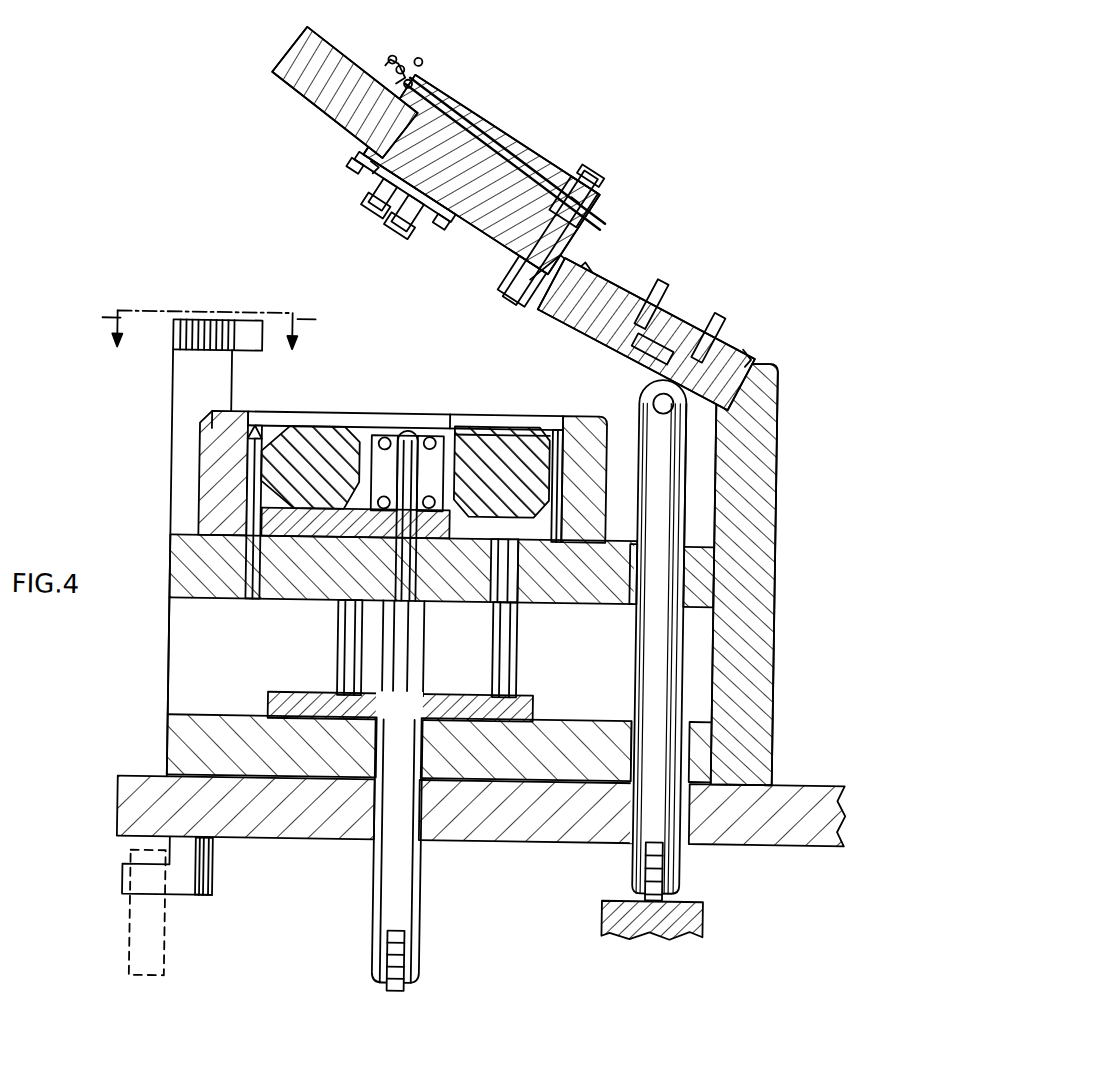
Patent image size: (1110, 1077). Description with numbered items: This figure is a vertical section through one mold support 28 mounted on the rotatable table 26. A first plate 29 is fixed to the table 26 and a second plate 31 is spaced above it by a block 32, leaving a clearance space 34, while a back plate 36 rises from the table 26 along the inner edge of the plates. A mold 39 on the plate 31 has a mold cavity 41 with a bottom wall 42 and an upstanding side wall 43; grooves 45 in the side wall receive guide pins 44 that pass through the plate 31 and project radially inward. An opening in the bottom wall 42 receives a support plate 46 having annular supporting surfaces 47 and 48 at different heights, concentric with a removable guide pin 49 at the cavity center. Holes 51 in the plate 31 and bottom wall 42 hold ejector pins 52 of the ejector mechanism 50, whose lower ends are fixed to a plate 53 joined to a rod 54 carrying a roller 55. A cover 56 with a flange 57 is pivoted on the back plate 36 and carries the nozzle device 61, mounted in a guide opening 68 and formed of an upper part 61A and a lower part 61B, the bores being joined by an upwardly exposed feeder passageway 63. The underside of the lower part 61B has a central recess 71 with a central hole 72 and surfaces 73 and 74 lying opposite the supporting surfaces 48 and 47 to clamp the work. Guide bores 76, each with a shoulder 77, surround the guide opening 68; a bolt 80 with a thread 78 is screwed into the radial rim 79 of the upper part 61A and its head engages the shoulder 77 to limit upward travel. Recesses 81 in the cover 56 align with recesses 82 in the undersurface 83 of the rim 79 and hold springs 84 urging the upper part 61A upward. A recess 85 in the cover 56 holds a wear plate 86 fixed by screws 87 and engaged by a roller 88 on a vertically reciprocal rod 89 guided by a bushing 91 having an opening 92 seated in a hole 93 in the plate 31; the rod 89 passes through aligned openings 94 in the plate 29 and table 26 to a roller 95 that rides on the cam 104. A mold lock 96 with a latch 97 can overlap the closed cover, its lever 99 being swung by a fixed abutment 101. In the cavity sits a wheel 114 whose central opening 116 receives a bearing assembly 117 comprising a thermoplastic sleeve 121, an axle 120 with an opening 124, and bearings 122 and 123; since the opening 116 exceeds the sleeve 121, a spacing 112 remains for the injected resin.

The table 26 is at (145, 772).
The mold support device 28 is at (238, 265).
The first plate 29 is at (180, 725).
The second plate 31 is at (178, 572).
The block 32 is at (176, 629).
The clearance space 34 is at (191, 664).
The back plate 36 is at (766, 647).
The mold 39 is at (484, 405).
The mold cavity 41 is at (319, 412).
The bottom wall 42 is at (302, 512).
The upstanding side wall 43 is at (256, 421).
The guide pin 44 is at (260, 460).
The groove 45 is at (253, 418).
The support plate 46 is at (483, 540).
The supporting surface 47 is at (525, 423).
The supporting surface 48 is at (434, 532).
The removable guide pin 49 is at (405, 532).
The ejector mechanism 50 is at (334, 660).
The hole 51 is at (519, 601).
The ejector pin 52 is at (516, 666).
The plate 53 is at (470, 704).
The rod 54 is at (413, 886).
The roller 55 is at (412, 990).
The cover 56 is at (661, 282).
The flange 57 is at (729, 354).
The nozzle device 61 is at (546, 150).
The upper part 61A is at (569, 194).
The lower part 61B is at (380, 171).
The feeder passageway 63 is at (505, 135).
The guide opening 68 is at (367, 152).
The central recess 71 is at (427, 226).
The central hole 72 is at (455, 222).
The surface 73 is at (415, 211).
The surface 74 is at (383, 199).
The guide bore 76 is at (615, 246).
The shoulder 77 is at (569, 285).
The thread 78 is at (599, 209).
The radial rim 79 is at (612, 228).
The bolt 80 is at (569, 243).
The recess 81 is at (381, 82).
The recess 82 is at (415, 73).
The undersurface 83 is at (391, 68).
The spring 84 is at (403, 75).
The recess 85 is at (691, 323).
The wear plate 86 is at (652, 354).
The screw 87 is at (630, 339).
The roller 88 is at (648, 400).
The rod 89 is at (653, 452).
The bushing 91 is at (682, 556).
The opening 92 is at (678, 564).
The hole 93 is at (673, 589).
The opening 94 is at (640, 730).
The roller 95 is at (661, 866).
The mold lock 96 is at (165, 397).
The latch 97 is at (246, 338).
The lever 99 is at (192, 883).
The abutment 101 is at (150, 930).
The cam 104 is at (695, 915).
The spacing 112 is at (467, 437).
The wheel 114 is at (327, 448).
The central opening 116 is at (378, 439).
The bearing assembly 117 is at (381, 434).
The axle 120 is at (395, 446).
The sleeve 121 is at (445, 435).
The bearing 122 is at (407, 426).
The bearing 123 is at (421, 602).
The opening 124 is at (430, 436).